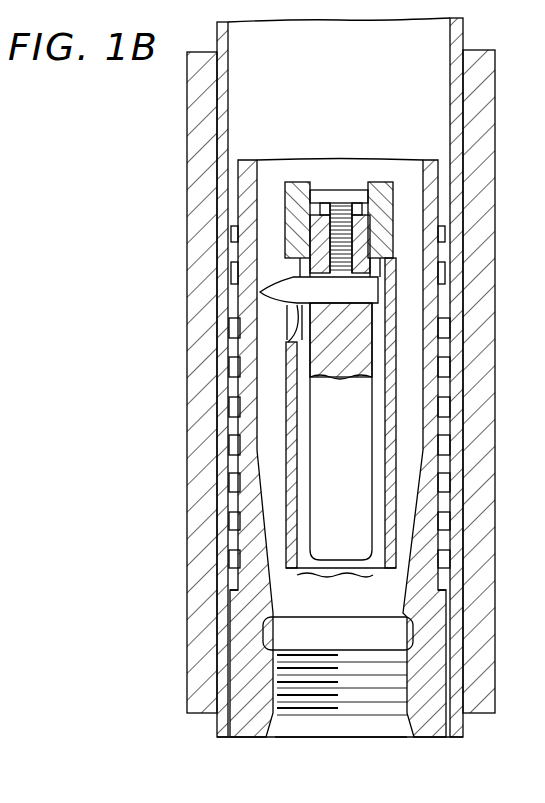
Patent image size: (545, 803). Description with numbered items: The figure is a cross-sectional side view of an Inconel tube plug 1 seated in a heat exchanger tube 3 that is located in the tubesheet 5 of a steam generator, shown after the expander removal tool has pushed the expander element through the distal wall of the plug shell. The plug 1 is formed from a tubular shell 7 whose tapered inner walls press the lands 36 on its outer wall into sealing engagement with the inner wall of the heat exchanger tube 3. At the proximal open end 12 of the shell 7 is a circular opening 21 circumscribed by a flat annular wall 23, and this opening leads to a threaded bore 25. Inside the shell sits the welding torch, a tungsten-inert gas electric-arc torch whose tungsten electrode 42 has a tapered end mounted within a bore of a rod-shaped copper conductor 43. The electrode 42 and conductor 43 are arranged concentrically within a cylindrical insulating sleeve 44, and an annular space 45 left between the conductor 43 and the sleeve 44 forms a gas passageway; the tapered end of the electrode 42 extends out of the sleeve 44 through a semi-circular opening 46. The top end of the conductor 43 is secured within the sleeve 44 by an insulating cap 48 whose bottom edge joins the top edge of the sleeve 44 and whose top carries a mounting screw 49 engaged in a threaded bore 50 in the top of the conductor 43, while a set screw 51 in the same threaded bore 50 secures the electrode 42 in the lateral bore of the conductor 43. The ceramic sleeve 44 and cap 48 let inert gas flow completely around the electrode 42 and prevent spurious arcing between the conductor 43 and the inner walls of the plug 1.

The plug 1 is at (272, 104).
The heat exchanger tube 3 is at (222, 152).
The tubesheet 5 is at (197, 203).
The tubular shell 7 is at (244, 273).
The proximal open end 12 is at (390, 728).
The circular opening 21 is at (268, 730).
The flat annular wall 23 is at (253, 737).
The threaded bore 25 is at (398, 686).
The lands 36 is at (237, 348).
The tungsten electrode 42 is at (283, 285).
The rod-shaped copper conductor 43 is at (357, 488).
The cylindrical insulating sleeve 44 is at (392, 475).
The annular space 45 is at (378, 508).
The semi-circular opening 46 is at (290, 333).
The insulating cap 48 is at (383, 196).
The mounting screw 49 is at (322, 196).
The threaded bore 50 is at (348, 247).
The set screw 51 is at (348, 262).